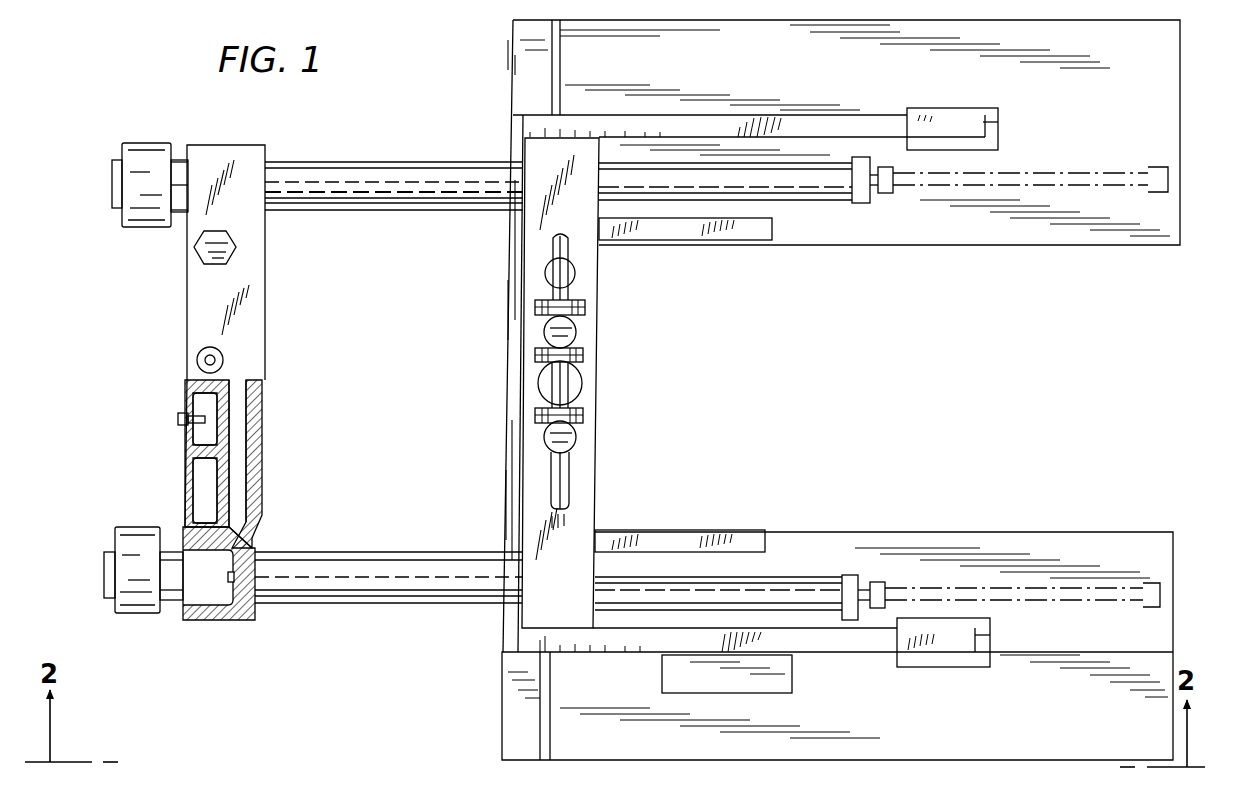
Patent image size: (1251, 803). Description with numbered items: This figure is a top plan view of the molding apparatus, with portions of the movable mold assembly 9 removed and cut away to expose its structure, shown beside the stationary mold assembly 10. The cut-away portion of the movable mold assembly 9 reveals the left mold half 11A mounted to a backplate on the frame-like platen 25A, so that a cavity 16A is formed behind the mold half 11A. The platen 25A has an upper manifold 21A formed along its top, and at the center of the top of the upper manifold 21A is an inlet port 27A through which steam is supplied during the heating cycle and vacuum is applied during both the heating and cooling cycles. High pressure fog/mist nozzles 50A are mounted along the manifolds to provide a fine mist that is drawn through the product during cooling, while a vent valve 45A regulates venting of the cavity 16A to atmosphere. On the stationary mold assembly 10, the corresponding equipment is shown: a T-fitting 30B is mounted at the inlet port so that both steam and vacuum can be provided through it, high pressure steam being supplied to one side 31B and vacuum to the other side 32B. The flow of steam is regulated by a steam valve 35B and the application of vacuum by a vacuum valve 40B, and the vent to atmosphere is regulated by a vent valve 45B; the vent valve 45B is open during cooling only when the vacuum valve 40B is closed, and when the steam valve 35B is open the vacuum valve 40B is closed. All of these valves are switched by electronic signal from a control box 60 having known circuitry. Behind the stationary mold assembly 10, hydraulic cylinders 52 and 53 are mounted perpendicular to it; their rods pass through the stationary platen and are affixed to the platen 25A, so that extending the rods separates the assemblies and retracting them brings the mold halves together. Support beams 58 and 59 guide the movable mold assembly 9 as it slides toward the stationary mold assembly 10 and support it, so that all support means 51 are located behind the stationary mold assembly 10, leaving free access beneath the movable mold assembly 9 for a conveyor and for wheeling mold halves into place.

The movable mold assembly 9 is at (268, 322).
The stationary mold assembly 10 is at (504, 335).
The left mold half 11A is at (263, 418).
The cavity 16A is at (240, 460).
The upper manifold 21A is at (190, 395).
The platen 25A is at (186, 500).
The inlet port 27A is at (198, 352).
The vent valve 45A is at (236, 247).
The high pressure fog/mist nozzle 50A is at (178, 434).
The vent valve 45B is at (576, 279).
The steam valve 35B is at (578, 331).
The steam side of T-fitting 31B is at (578, 368).
The T-fitting 30B is at (574, 392).
The vacuum side of T-fitting 32B is at (582, 418).
The vacuum valve 40B is at (572, 460).
The support beam 59 is at (390, 203).
The support beam 58 is at (402, 560).
The hydraulic cylinder 53 is at (810, 200).
The hydraulic cylinder 52 is at (820, 580).
The support means 51 is at (808, 648).
The control box 60 is at (716, 693).